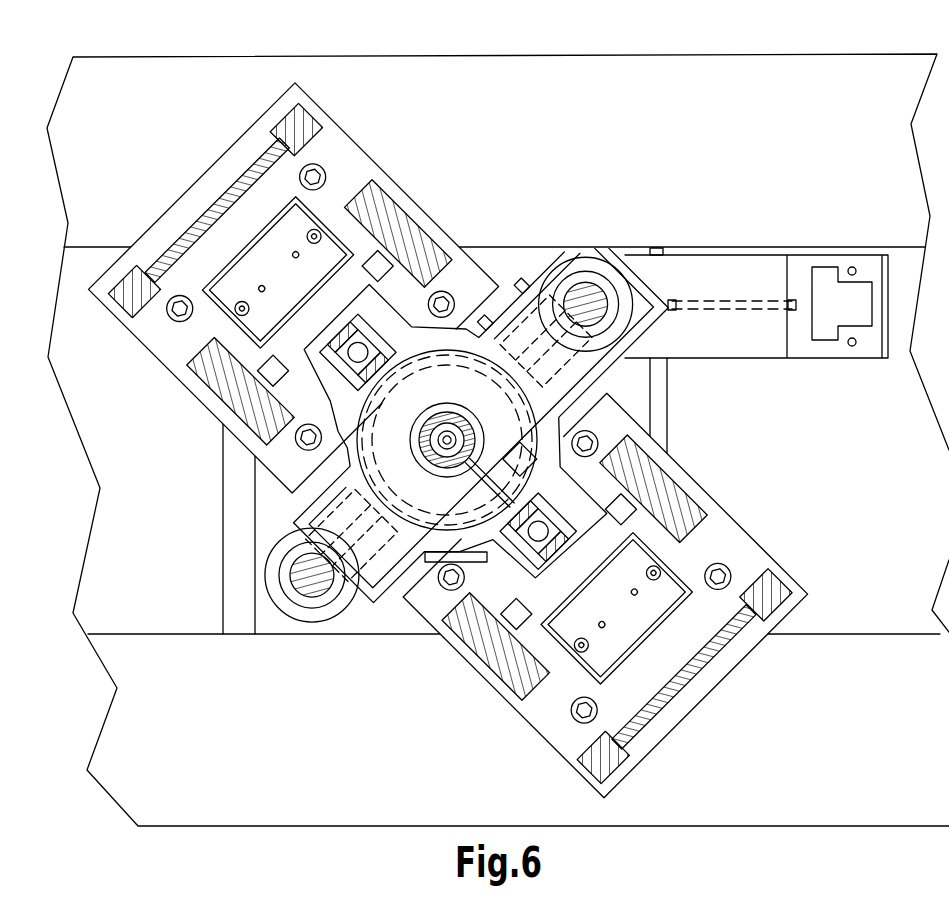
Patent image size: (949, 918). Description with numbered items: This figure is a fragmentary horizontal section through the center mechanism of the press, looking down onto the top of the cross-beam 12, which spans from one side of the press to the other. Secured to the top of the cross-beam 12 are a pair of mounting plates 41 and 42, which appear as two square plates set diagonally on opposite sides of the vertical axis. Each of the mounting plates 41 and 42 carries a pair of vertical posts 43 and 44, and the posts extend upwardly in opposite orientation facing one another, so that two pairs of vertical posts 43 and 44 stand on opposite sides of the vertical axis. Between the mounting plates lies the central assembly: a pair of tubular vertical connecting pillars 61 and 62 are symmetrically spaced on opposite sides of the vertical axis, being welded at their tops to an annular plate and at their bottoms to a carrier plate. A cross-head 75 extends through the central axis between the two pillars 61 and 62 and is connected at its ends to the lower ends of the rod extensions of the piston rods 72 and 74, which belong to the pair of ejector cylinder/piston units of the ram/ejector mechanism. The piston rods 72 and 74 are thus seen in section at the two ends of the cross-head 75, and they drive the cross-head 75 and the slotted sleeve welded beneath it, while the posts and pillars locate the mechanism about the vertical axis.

The cross-beam 12 is at (626, 53).
The mounting plate 41 is at (605, 595).
The mounting plate 42 is at (392, 187).
The vertical post 43 is at (208, 420).
The vertical post 44 is at (668, 465).
The connecting pillar 61 is at (352, 335).
The connecting pillar 62 is at (556, 560).
The piston rod 72 is at (305, 596).
The piston rod 74 is at (578, 288).
The cross-head 75 is at (287, 545).